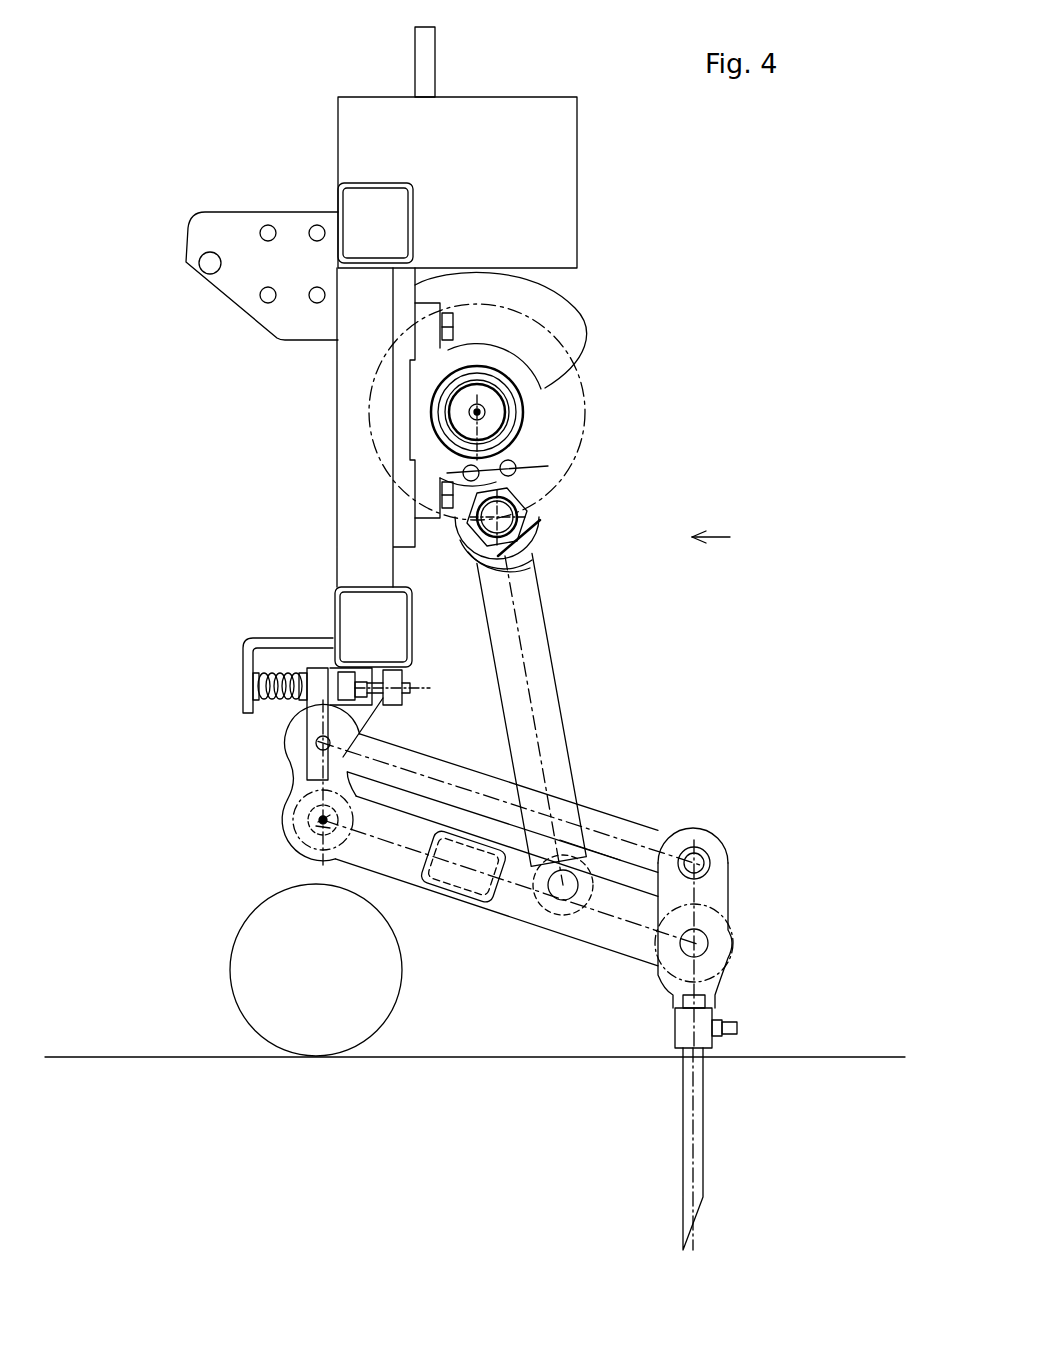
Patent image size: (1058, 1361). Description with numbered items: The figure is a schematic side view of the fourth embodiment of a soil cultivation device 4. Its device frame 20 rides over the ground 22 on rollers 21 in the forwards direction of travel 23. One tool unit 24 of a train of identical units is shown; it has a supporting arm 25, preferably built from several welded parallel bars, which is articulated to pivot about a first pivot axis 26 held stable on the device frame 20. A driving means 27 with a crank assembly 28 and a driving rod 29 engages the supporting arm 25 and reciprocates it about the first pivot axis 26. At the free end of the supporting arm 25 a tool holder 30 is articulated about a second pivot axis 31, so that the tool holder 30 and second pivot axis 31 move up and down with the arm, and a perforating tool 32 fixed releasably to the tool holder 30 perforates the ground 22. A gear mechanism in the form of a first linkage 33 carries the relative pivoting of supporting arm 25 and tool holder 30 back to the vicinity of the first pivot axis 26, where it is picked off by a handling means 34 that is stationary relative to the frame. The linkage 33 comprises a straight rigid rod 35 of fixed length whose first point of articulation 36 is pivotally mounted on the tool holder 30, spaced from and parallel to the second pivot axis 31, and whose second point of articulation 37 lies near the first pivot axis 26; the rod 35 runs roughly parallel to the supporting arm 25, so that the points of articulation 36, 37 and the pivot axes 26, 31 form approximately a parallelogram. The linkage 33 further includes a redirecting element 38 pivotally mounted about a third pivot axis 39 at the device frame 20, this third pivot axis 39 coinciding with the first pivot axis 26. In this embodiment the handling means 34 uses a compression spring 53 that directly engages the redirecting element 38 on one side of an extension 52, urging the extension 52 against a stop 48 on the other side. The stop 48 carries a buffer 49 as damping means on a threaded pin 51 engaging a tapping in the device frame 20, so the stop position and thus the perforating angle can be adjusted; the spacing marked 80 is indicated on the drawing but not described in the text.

The soil cultivation device 4 is at (541, 53).
The device frame 20 is at (340, 448).
The rollers 21 is at (378, 1008).
The ground 22 is at (540, 1052).
The forwards direction of travel 23 is at (800, 537).
The tool unit 24 is at (704, 1008).
The supporting arm 25 is at (590, 925).
The first pivot axis 26 is at (318, 828).
The driving means 27 is at (630, 505).
The crank assembly 28 is at (535, 457).
The driving rod 29 is at (550, 678).
The tool holder 30 is at (730, 897).
The second pivot axis 31 is at (702, 944).
The perforating tool 32 is at (703, 1122).
The first linkage 33 is at (624, 812).
The handling means 34 is at (357, 606).
The rod 35 is at (458, 775).
The first point of articulation 36 is at (703, 861).
The second point of articulation 37 is at (315, 745).
The redirecting element 38 is at (305, 777).
The third pivot axis 39 is at (323, 833).
The stop 48 is at (364, 708).
The buffer 49 is at (345, 676).
The threaded pin 51 is at (393, 688).
The extension 52 is at (313, 680).
The compression spring 53 is at (280, 700).
The spacing dimension 80 is at (666, 899).